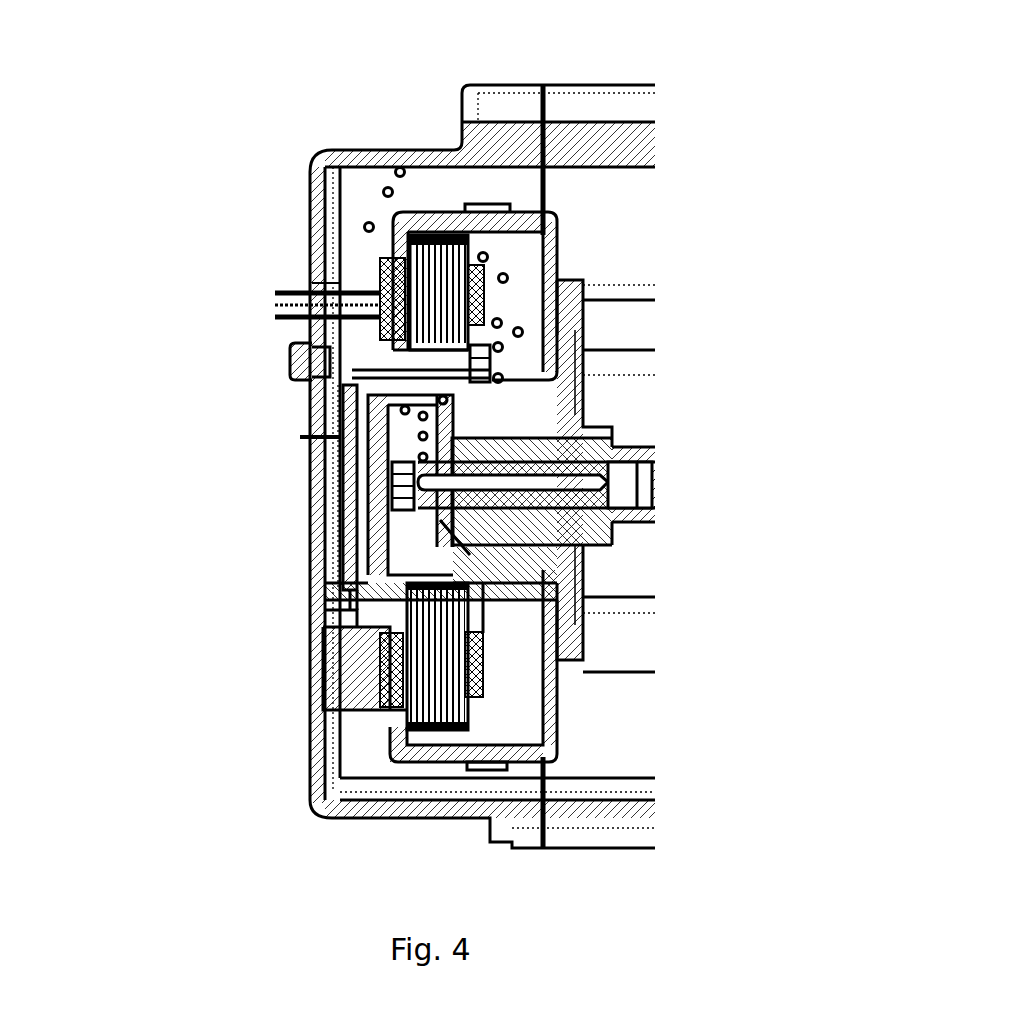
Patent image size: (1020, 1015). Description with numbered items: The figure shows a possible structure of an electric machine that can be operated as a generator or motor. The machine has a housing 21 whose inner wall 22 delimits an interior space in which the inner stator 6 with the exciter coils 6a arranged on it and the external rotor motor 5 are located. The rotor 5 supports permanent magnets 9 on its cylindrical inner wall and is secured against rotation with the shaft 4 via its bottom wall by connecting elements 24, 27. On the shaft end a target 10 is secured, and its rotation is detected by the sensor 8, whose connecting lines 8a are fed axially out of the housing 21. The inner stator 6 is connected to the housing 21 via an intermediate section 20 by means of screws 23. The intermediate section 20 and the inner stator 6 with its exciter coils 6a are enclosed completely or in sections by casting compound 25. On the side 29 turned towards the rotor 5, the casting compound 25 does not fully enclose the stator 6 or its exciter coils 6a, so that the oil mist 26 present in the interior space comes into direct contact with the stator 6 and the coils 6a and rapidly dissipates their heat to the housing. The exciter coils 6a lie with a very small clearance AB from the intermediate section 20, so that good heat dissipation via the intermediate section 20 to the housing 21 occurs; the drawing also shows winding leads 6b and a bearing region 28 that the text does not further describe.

The shaft 4 is at (620, 480).
The external rotor motor 5 is at (510, 205).
The inner stator 6 is at (573, 337).
The exciter coils 6a is at (383, 277).
The winding leads 6b is at (277, 306).
The sensor 8 is at (360, 490).
The connecting lines 8a is at (300, 437).
The permanent magnets 9 is at (390, 213).
The target 10 is at (577, 607).
The intermediate section 20 is at (300, 343).
The housing 21 is at (590, 100).
The inner wall 22 is at (340, 214).
The screws 23 is at (330, 367).
The connecting element 24 is at (647, 518).
The casting compound 25 is at (487, 328).
The oil mist 26 is at (487, 292).
The connecting element 27 is at (573, 560).
The bearing 28 is at (348, 257).
The side turned towards the rotor 29 is at (505, 275).
The clearance AB is at (320, 283).